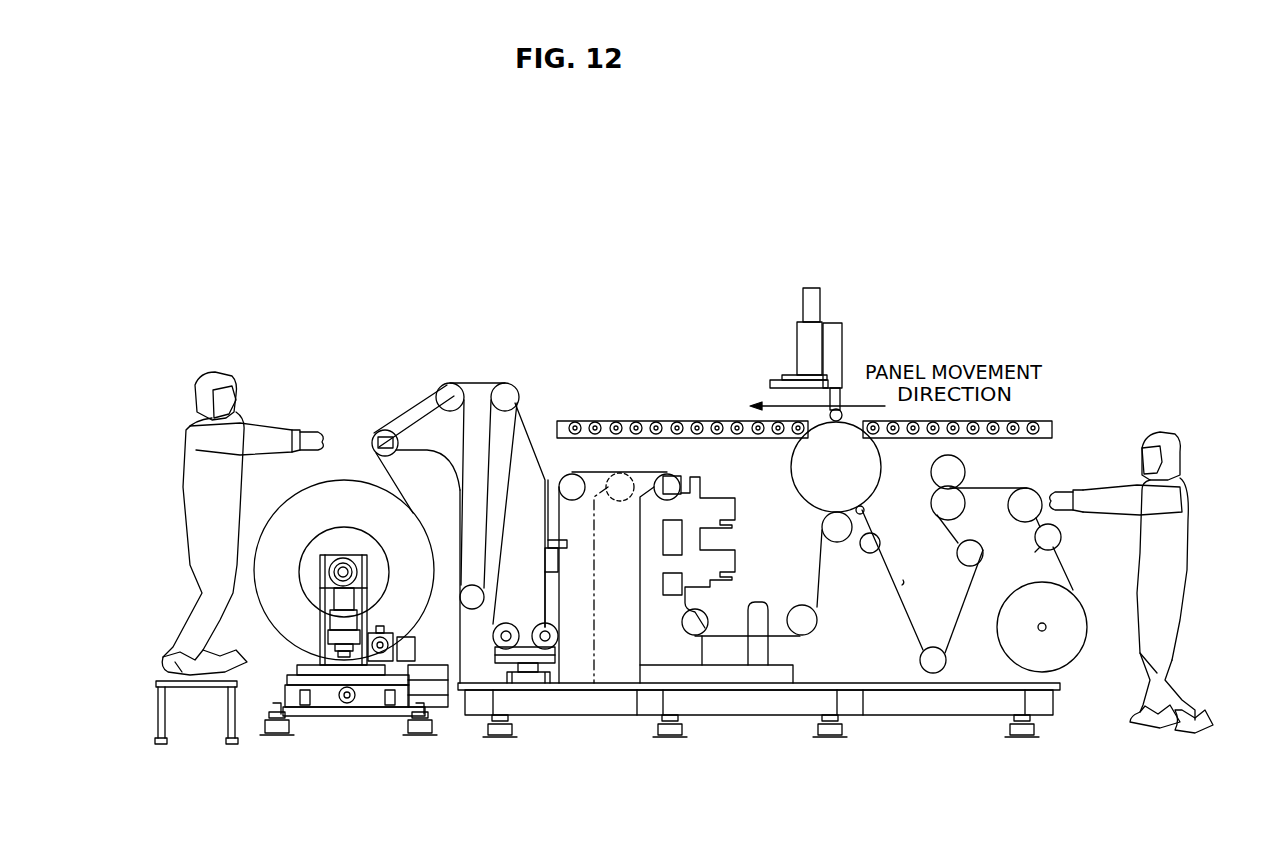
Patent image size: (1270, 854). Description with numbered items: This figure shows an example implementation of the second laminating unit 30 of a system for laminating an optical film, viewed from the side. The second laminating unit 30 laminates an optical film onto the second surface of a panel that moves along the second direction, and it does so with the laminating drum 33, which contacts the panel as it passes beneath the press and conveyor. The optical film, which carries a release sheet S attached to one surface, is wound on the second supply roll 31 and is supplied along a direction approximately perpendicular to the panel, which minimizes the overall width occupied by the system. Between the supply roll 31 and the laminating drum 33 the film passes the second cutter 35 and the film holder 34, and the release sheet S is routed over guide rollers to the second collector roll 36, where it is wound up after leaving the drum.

The second laminating unit 30 is at (527, 367).
The second supply roll 31 is at (344, 482).
The laminating drum 33 is at (805, 503).
The film holder 34 is at (834, 542).
The second cutter 35 is at (713, 500).
The second collector roll 36 is at (1020, 585).
The release sheet S is at (893, 595).